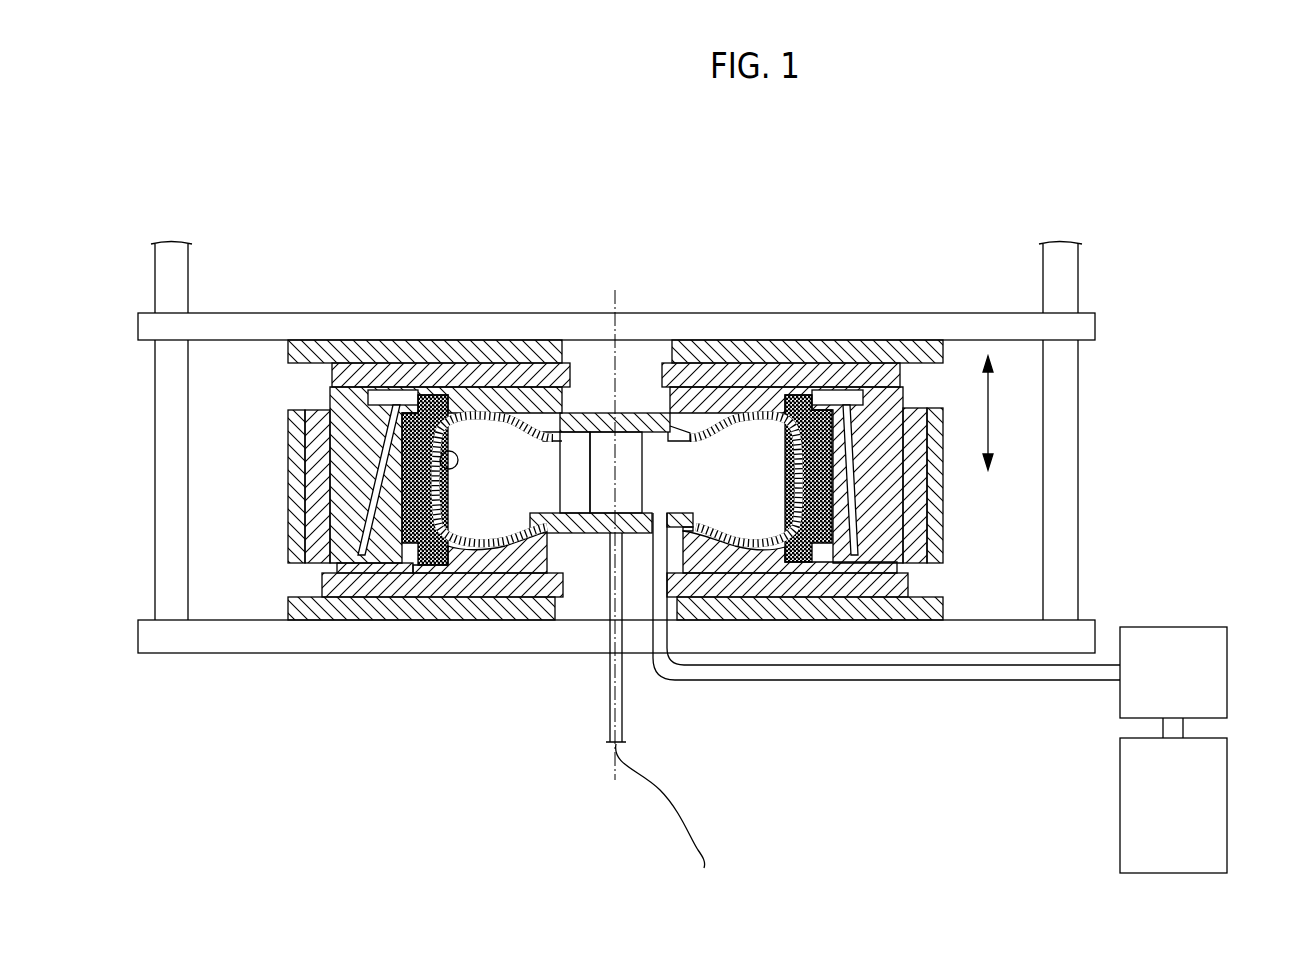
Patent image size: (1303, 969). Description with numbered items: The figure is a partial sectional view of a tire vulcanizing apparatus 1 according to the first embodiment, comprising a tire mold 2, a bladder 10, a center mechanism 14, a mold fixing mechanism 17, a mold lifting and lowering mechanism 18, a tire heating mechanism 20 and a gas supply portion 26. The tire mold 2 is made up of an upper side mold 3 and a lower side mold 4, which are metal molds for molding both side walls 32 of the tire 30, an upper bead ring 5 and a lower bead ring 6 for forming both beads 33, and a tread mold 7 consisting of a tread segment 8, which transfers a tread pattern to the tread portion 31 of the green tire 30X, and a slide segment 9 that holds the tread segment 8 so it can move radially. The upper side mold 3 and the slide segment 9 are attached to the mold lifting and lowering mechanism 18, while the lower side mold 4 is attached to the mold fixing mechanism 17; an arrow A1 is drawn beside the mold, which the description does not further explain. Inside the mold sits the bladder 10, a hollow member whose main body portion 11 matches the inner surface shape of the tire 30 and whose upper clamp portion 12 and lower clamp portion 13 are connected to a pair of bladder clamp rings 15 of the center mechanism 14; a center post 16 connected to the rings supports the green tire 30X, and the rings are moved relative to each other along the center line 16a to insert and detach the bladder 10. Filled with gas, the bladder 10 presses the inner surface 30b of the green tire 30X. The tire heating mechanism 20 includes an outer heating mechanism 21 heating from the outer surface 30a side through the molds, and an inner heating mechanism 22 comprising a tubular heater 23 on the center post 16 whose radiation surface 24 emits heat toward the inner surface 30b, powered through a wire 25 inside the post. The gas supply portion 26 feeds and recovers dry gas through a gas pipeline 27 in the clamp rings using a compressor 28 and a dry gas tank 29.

The tire vulcanizing apparatus 1 is at (812, 236).
The tire mold 2 is at (777, 388).
The upper side mold 3 is at (743, 403).
The lower side mold 4 is at (760, 560).
The upper bead ring 5 is at (690, 423).
The lower bead ring 6 is at (690, 540).
The tread mold 7 is at (855, 718).
The tread segment 8 is at (817, 510).
The slide segment 9 is at (847, 517).
The bladder 10 is at (555, 240).
The main body portion 11 is at (470, 545).
The upper clamp portion 12 is at (520, 540).
The lower clamp portion 13 is at (548, 430).
The center mechanism 14 is at (606, 428).
The bladder clamp ring 15 is at (650, 420).
The center post 16 is at (625, 713).
The center line 16a is at (612, 745).
The mold fixing mechanism 17 is at (945, 640).
The mold lifting and lowering mechanism 18 is at (310, 325).
The tire heating mechanism 20 is at (682, 493).
The outer heating mechanism 21 is at (388, 350).
The inner heating mechanism 22 is at (630, 434).
The heater 23 is at (610, 495).
The radiation surface 24 is at (587, 465).
The wire 25 is at (676, 826).
The gas supply portion 26 is at (1182, 684).
The gas pipeline 27 is at (1097, 673).
The compressor 28 is at (1173, 647).
The dry gas tank 29 is at (1212, 790).
The tire 30 is at (562, 484).
The green tire 30X is at (562, 484).
The outer surface 30a is at (422, 474).
The inner surface 30b is at (445, 455).
The tread portion 31 is at (383, 547).
The side walls 32 is at (473, 547).
The beads 33 is at (512, 542).
The vertical moving direction A1 is at (988, 410).